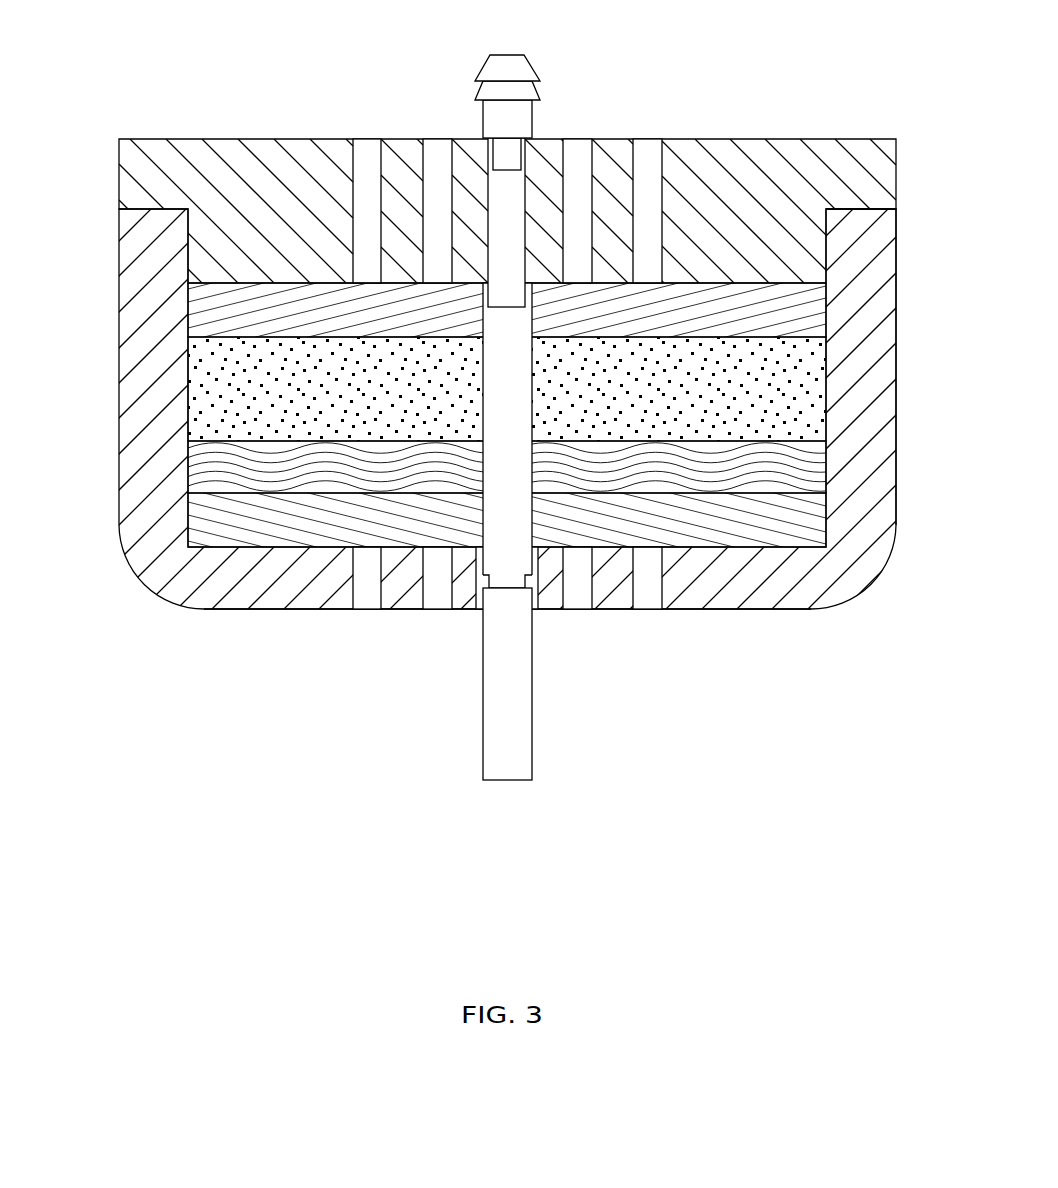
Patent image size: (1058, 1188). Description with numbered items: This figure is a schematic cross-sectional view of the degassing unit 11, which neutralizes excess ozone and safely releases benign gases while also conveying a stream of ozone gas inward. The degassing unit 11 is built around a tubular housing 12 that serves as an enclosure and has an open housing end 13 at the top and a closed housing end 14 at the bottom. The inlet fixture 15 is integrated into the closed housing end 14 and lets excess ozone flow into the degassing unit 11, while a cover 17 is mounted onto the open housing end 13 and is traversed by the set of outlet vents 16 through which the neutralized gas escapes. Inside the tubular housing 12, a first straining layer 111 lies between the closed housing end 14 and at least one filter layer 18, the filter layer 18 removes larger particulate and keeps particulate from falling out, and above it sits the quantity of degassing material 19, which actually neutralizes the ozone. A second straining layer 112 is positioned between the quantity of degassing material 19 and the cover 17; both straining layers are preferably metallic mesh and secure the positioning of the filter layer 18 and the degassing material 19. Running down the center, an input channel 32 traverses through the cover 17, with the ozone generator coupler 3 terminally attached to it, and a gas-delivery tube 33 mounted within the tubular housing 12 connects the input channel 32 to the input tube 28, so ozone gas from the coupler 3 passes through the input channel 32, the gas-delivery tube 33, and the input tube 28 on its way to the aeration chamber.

The ozone generator coupler 3 is at (530, 62).
The degassing unit 11 is at (101, 138).
The tubular housing 12 is at (167, 402).
The open housing end 13 is at (898, 207).
The closed housing end 14 is at (753, 617).
The inlet fixture 15 is at (367, 602).
The set of outlet vents 16 is at (366, 148).
The cover 17 is at (756, 222).
The filter layer 18 is at (577, 477).
The quantity of degassing material 19 is at (432, 400).
The input tube 28 is at (527, 728).
The input channel 32 is at (520, 250).
The gas-delivery tube 33 is at (520, 477).
The first straining layer 111 is at (440, 532).
The second straining layer 112 is at (587, 323).